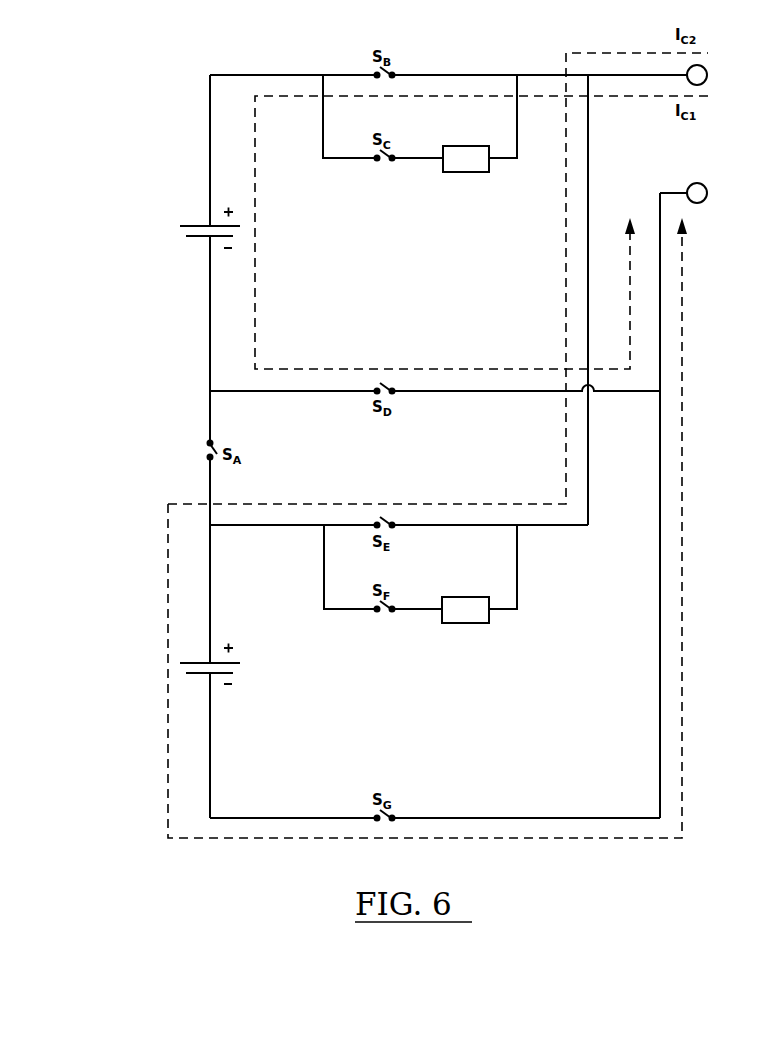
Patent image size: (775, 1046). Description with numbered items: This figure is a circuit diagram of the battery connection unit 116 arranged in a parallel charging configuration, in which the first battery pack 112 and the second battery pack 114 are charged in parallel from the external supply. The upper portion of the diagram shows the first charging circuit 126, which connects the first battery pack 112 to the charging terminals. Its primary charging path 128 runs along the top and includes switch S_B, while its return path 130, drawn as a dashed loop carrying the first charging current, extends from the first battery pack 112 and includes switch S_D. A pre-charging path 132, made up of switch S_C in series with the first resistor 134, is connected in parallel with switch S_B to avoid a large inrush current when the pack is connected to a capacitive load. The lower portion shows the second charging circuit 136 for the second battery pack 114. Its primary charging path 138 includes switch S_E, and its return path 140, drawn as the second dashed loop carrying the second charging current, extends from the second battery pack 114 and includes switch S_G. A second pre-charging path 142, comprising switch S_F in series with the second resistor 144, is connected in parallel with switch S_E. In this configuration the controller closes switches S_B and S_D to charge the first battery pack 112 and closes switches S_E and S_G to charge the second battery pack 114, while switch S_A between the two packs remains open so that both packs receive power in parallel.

The first battery pack 112 is at (200, 252).
The second battery pack 114 is at (198, 688).
The battery connection unit 116 is at (725, 216).
The first charging circuit 126 is at (204, 144).
The primary charging path 128 is at (462, 63).
The return path 130 is at (496, 378).
The pre-charging path 132 is at (528, 134).
The first resistor 134 is at (464, 173).
The second charging circuit 136 is at (200, 580).
The primary charging path 138 is at (465, 514).
The return path 140 is at (673, 677).
The pre-charging path 142 is at (528, 586).
The second resistor 144 is at (464, 624).